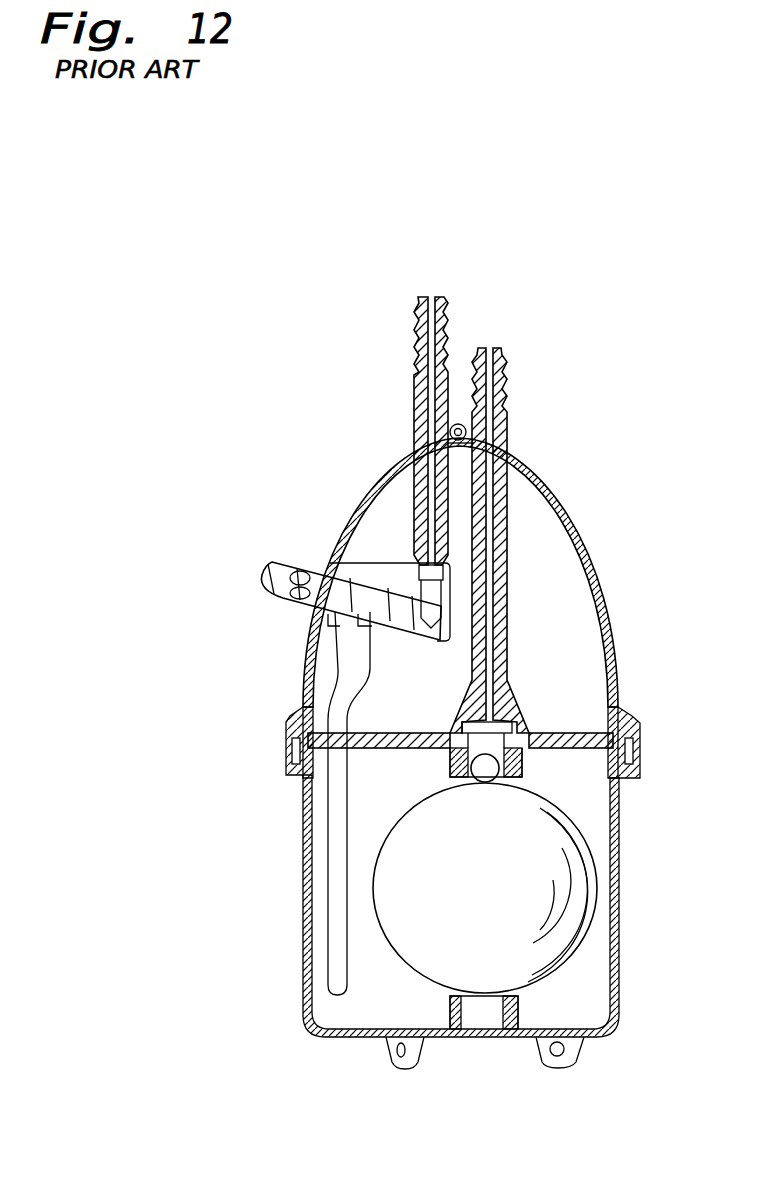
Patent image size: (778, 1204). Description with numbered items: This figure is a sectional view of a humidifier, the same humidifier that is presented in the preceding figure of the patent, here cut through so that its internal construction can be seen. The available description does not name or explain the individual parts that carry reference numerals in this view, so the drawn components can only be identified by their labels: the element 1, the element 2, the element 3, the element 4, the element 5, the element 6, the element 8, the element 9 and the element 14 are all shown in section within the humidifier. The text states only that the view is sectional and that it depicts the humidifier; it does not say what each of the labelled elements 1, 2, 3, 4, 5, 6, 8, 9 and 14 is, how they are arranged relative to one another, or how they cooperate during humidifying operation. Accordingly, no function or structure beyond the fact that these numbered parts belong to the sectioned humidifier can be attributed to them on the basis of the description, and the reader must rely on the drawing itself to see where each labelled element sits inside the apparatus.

The housing dome 1 is at (582, 522).
The inlet tube 2 is at (505, 433).
The outlet tube 3 is at (414, 398).
The nozzle 4 is at (310, 572).
The dip tube 5 is at (335, 803).
The partition plate 6 is at (580, 733).
The float ball 8 is at (543, 842).
The valve ball 9 is at (478, 780).
The valve housing 14 is at (526, 754).